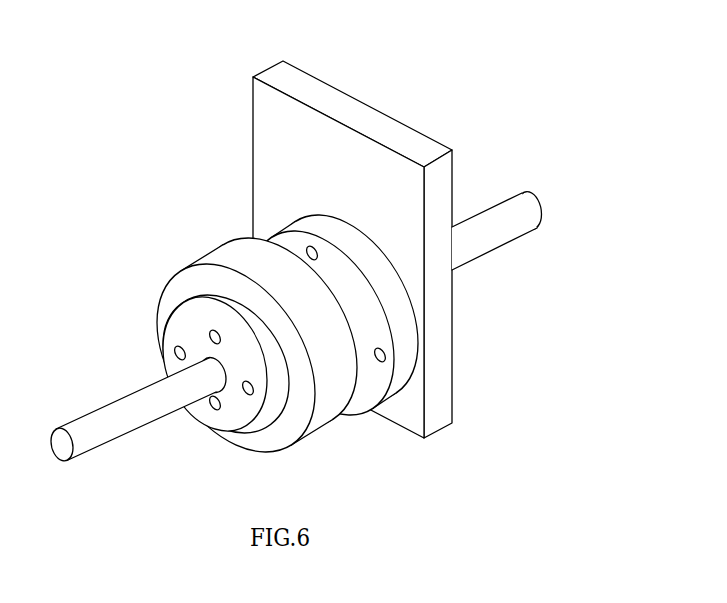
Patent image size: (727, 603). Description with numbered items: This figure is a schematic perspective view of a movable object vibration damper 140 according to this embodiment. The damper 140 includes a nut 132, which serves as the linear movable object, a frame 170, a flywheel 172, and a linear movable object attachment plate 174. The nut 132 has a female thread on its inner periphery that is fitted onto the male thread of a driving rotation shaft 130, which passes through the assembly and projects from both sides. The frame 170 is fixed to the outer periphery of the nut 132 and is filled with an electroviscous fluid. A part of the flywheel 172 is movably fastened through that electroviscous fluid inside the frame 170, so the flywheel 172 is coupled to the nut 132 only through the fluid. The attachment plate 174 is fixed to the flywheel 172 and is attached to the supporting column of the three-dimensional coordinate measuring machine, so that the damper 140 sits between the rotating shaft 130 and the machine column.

The movable object vibration damper 140 is at (214, 95).
The linear movable object attachment plate 174 is at (380, 128).
The flywheel 172 is at (307, 222).
The frame 170 is at (227, 260).
The nut 132 is at (187, 323).
The driving rotation shaft 130 is at (508, 210).